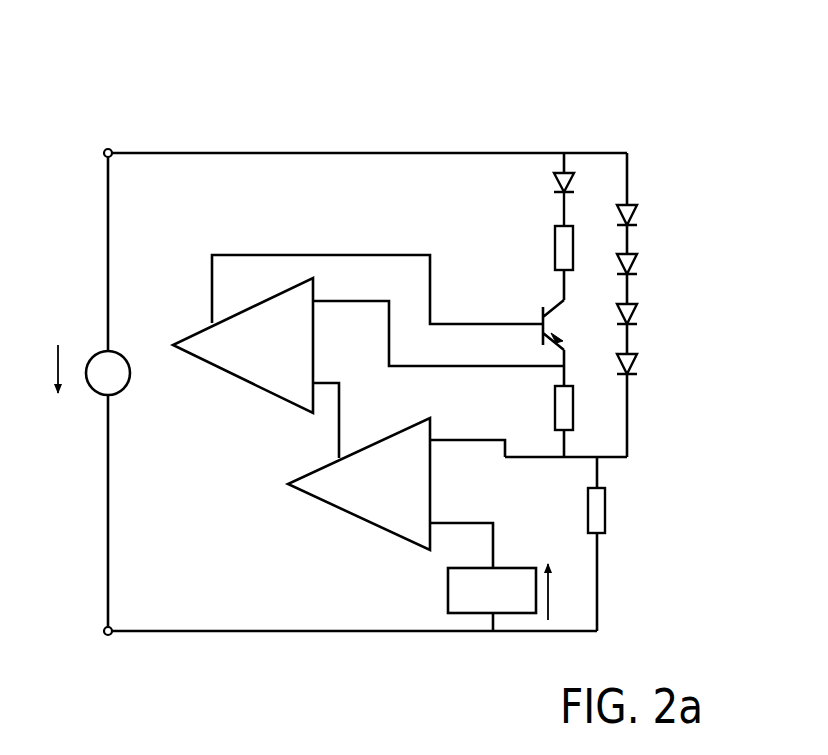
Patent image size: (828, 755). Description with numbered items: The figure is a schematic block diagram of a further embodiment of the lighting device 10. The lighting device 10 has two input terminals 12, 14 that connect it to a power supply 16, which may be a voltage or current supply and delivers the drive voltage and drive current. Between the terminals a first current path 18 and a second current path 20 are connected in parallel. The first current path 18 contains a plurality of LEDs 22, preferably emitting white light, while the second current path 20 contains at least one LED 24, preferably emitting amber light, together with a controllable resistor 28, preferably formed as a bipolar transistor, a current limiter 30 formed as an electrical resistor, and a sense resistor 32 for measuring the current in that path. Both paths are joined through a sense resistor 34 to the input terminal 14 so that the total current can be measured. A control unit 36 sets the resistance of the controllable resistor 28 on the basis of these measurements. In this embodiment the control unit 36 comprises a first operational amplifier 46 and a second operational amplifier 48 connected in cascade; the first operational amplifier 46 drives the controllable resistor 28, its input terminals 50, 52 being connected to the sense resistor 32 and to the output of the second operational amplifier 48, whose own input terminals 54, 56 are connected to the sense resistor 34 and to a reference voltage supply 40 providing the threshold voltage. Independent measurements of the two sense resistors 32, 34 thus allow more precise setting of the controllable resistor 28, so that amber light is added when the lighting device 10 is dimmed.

The lighting device 10 is at (666, 80).
The input terminal 12 is at (106, 150).
The input terminal 14 is at (105, 635).
The power supply 16 is at (101, 393).
The first current path 18 is at (629, 165).
The second current path 20 is at (561, 162).
The LEDs 22 is at (639, 216).
The LED 24 is at (556, 188).
The controllable resistor 28 is at (558, 306).
The current limiter 30 is at (555, 243).
The sense resistor 32 is at (555, 415).
The sense resistor 34 is at (606, 507).
The control unit 36 is at (229, 500).
The reference voltage supply 40 is at (448, 594).
The first operational amplifier 46 is at (210, 367).
The second operational amplifier 48 is at (341, 513).
The input terminal 50 is at (402, 368).
The input terminal 52 is at (341, 414).
The input terminal 54 is at (543, 459).
The input terminal 56 is at (495, 535).